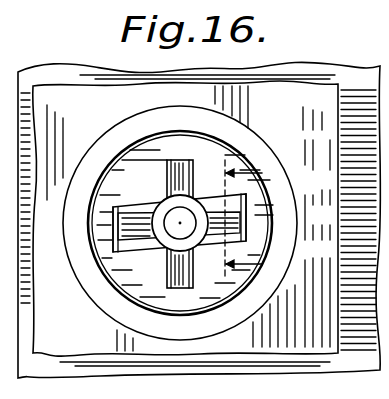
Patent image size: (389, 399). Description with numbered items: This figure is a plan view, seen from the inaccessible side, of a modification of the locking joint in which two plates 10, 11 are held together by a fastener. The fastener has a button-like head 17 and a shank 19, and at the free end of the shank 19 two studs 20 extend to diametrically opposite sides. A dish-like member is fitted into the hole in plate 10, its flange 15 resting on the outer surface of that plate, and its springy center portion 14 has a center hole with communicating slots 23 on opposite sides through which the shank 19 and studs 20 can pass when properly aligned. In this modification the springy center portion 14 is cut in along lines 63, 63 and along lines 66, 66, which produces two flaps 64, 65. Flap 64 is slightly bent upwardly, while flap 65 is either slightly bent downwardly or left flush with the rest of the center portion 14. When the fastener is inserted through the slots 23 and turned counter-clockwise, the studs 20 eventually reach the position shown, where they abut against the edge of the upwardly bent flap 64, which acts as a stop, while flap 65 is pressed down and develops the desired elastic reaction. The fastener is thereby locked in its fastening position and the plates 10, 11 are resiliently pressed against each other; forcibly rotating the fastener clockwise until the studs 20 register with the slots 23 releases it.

The plate 10 is at (305, 97).
The plate 11 is at (362, 352).
The springy center portion 14 is at (128, 194).
The flange 15 is at (102, 145).
The head 17 is at (255, 220).
The shank 19 is at (163, 245).
The studs 20 is at (86, 234).
The slots 23 is at (163, 158).
The cut-in lines 63 is at (113, 218).
The flap 64 is at (133, 243).
The flap 65 is at (88, 199).
The cut-in lines 66 is at (198, 192).